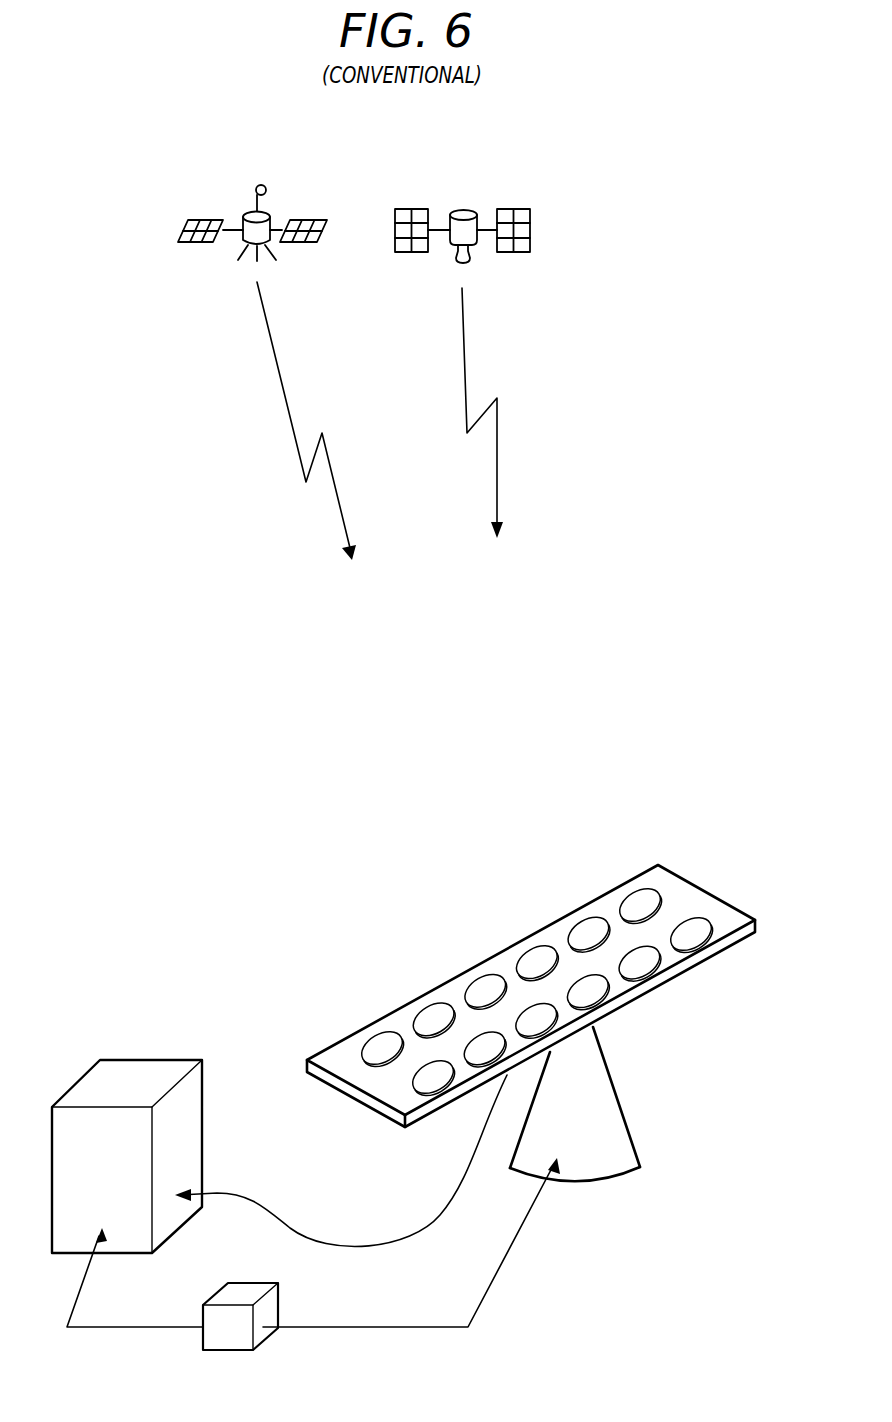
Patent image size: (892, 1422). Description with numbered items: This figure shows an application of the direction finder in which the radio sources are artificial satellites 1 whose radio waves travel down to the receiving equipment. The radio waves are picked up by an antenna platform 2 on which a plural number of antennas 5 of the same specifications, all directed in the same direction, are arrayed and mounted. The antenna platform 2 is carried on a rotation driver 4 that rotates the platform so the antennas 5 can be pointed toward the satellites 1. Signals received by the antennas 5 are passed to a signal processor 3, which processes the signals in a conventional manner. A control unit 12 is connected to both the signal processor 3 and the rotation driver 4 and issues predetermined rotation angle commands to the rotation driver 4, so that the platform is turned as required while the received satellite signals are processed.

The artificial satellites 1 is at (273, 205).
The antenna platform 2 is at (693, 883).
The signal processor 3 is at (145, 1059).
The rotation driver 4 is at (615, 1080).
The antennas 5 is at (703, 942).
The control unit 12 is at (243, 1290).